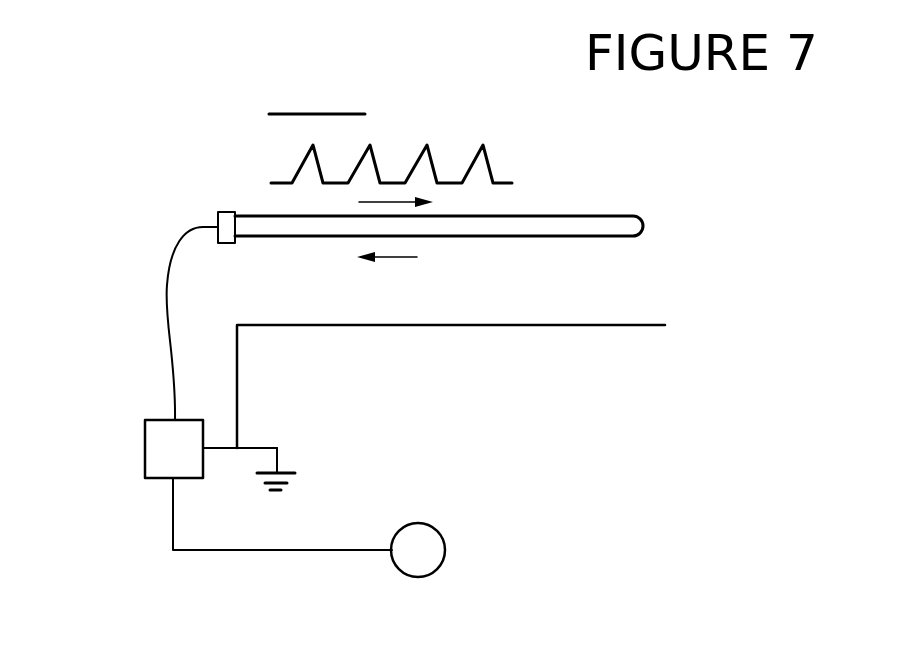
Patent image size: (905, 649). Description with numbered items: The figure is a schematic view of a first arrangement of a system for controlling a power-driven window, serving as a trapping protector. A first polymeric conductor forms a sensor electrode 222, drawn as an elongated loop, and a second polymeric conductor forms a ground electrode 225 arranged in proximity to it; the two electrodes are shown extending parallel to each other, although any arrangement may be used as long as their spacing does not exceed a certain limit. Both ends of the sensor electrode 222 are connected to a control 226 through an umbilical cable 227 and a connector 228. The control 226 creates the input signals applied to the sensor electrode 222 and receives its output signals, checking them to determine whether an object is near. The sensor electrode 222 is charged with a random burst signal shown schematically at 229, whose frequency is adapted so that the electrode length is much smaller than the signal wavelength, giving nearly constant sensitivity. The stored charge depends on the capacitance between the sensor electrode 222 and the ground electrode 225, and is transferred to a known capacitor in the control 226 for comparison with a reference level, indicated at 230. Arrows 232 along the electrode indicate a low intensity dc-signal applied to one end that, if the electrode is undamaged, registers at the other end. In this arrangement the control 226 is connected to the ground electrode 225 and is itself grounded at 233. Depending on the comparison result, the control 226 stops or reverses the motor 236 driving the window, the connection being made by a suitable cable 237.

The sensor electrode 222 is at (600, 212).
The ground electrode 225 is at (582, 326).
The control 226 is at (145, 455).
The umbilical cable 227 is at (167, 292).
The connector 228 is at (217, 210).
The random burst signal 229 is at (433, 157).
The reference level 230 is at (327, 112).
The direction of motion arrows 232 is at (378, 202).
The ground 233 is at (277, 460).
The motor 236 is at (445, 542).
The cable 237 is at (282, 550).